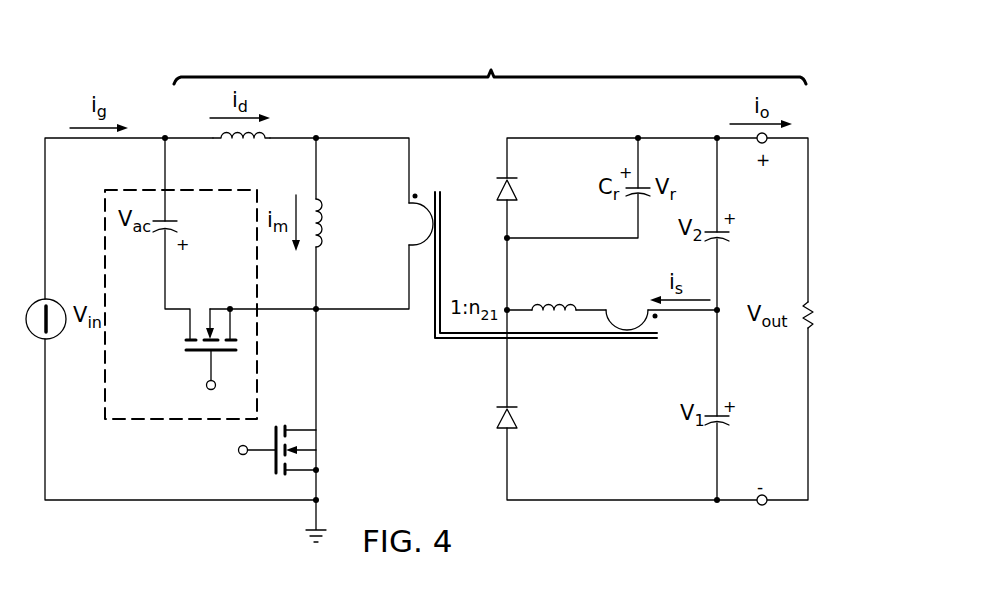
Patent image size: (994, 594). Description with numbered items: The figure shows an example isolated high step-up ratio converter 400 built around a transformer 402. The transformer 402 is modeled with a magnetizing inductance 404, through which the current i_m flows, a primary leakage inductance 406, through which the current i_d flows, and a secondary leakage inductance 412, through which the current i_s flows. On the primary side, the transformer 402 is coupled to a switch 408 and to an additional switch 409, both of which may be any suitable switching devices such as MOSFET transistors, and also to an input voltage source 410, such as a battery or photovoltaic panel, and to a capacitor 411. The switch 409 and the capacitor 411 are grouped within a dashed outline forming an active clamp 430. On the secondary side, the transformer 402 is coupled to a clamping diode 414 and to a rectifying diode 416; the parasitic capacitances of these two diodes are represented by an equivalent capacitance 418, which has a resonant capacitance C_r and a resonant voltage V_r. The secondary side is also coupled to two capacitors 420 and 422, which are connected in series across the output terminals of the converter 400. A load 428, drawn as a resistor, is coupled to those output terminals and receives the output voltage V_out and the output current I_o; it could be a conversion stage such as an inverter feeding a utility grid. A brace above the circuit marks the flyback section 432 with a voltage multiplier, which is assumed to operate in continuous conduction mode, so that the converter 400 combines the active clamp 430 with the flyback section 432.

The isolated high step-up ratio converter 400 is at (148, 54).
The transformer 402 is at (469, 345).
The magnetizing inductance 404 is at (325, 228).
The primary leakage inductance 406 is at (213, 136).
The switch 408 is at (272, 466).
The additional switch 409 is at (195, 355).
The input voltage source 410 is at (51, 303).
The capacitor 411 is at (178, 232).
The secondary leakage inductance 412 is at (556, 300).
The clamping diode 414 is at (517, 420).
The rectifying diode 416 is at (516, 185).
The equivalent capacitance 418 is at (630, 212).
The capacitor 420 is at (729, 238).
The capacitor 422 is at (730, 424).
The load 428 is at (813, 322).
The active clamp 430 is at (180, 430).
The flyback section 432 is at (490, 63).